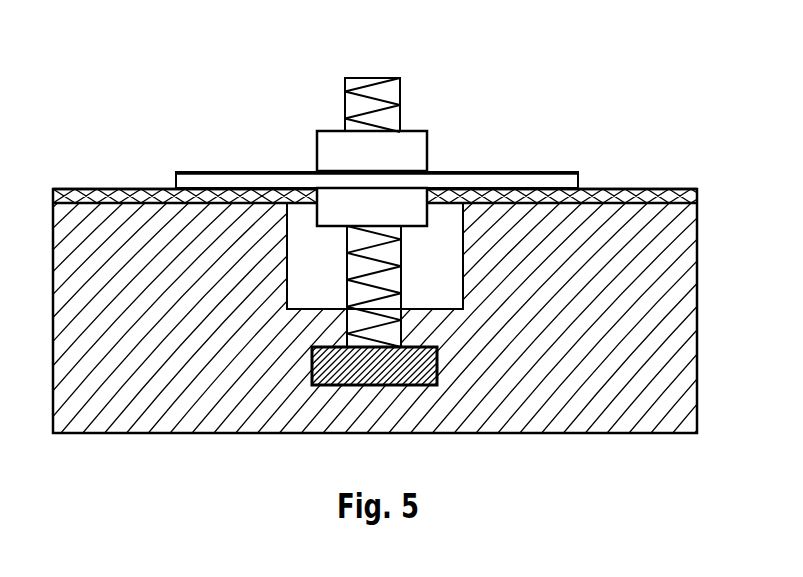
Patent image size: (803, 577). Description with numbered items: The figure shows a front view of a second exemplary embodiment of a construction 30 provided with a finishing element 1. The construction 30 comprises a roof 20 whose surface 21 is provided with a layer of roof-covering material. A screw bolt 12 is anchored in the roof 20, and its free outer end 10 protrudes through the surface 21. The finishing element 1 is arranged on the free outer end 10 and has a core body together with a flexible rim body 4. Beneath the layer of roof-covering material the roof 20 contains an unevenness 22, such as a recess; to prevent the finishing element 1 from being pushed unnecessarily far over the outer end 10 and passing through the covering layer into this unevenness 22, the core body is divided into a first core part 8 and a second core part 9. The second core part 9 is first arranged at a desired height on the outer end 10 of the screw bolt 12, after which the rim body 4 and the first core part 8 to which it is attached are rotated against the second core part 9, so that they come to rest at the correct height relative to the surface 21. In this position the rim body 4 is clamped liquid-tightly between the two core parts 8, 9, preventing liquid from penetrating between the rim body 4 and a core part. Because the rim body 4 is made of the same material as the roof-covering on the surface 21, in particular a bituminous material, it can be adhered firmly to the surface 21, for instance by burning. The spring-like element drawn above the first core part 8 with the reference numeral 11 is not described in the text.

The construction 30 is at (115, 84).
The finishing element 1 is at (409, 155).
The flexible rim body 4 is at (537, 182).
The first core part 8 is at (408, 148).
The second core part 9 is at (403, 207).
The free outer end 10 is at (363, 278).
The upper spring 11 is at (395, 87).
The screw bolt 12 is at (422, 387).
The roof 20 is at (698, 235).
The surface 21 is at (677, 190).
The unevenness 22 is at (437, 255).